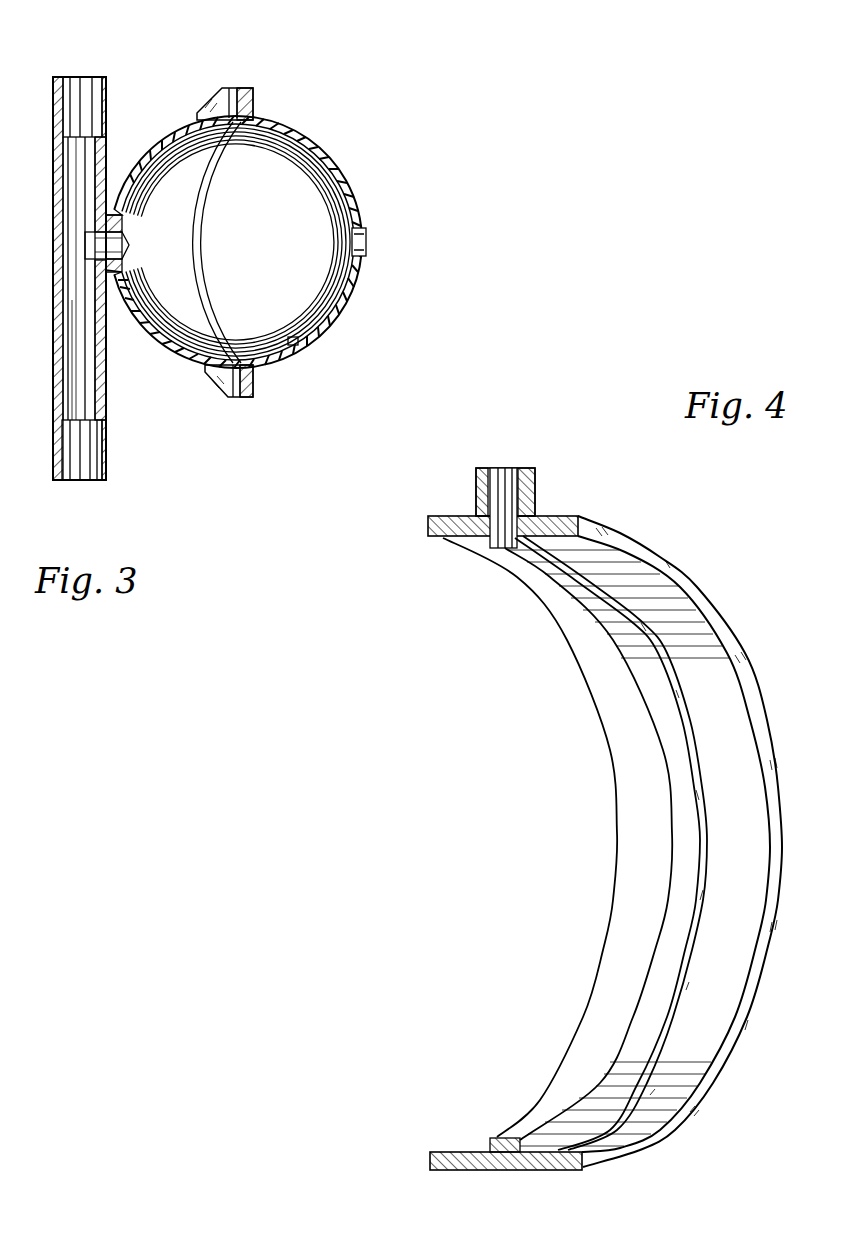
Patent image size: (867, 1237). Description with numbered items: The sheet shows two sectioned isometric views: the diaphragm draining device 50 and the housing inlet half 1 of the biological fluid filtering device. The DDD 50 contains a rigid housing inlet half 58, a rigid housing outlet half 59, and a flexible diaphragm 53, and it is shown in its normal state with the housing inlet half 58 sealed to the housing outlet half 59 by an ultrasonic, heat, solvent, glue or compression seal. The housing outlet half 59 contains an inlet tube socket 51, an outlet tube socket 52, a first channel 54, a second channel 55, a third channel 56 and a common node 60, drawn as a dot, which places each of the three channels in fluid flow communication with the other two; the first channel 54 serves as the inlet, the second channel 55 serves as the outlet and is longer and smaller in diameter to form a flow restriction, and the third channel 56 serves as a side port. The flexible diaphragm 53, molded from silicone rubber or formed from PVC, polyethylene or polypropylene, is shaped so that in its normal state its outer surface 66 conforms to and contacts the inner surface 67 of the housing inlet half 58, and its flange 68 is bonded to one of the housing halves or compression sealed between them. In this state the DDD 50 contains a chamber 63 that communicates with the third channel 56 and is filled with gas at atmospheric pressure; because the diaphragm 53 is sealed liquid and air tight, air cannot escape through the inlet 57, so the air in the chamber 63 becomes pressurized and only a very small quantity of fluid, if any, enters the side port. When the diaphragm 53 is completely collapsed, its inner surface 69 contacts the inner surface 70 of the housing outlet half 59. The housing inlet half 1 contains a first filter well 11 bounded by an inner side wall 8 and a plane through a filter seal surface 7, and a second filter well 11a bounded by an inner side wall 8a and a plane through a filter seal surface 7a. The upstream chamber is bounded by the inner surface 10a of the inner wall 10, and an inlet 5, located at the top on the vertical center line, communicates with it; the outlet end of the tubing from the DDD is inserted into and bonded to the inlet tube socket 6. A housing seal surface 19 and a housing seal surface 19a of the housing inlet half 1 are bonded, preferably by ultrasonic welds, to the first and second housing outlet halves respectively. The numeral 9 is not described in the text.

In FIG. 3, the diaphragm draining device 50 is at (398, 163).
In FIG. 3, the inlet tube socket 51 is at (86, 88).
In FIG. 3, the outlet tube socket 52 is at (84, 468).
In FIG. 3, the flexible diaphragm 53 is at (303, 140).
In FIG. 3, the first channel 54 is at (83, 157).
In FIG. 3, the second channel 55 is at (83, 388).
In FIG. 3, the third channel 56 is at (117, 303).
In FIG. 3, the inlet 57 is at (366, 243).
In FIG. 3, the housing inlet half 58 is at (350, 330).
In FIG. 3, the housing outlet half 59 is at (216, 405).
In FIG. 3, the common node 60 is at (88, 255).
In FIG. 3, the chamber 63 is at (298, 237).
In FIG. 3, the outer surface 66 is at (348, 287).
In FIG. 3, the inner surface 67 is at (300, 344).
In FIG. 3, the flange 68 is at (233, 116).
In FIG. 3, the inner surface 69 is at (313, 157).
In FIG. 3, the inner surface 70 is at (150, 167).
In FIG. 4, the housing inlet half 1 is at (400, 995).
In FIG. 4, the inlet 5 is at (496, 550).
In FIG. 4, the inlet tube socket 6 is at (500, 480).
In FIG. 4, the filter seal surface 7 is at (628, 655).
In FIG. 4, the filter seal surface 7a is at (655, 635).
In FIG. 4, the inner side wall 8 is at (630, 770).
In FIG. 4, the inner side wall 8a is at (712, 668).
In FIG. 4, the flange 9 is at (562, 520).
In FIG. 4, the inner wall 10 is at (492, 1140).
In FIG. 4, the inner surface 10a is at (635, 1030).
In FIG. 4, the first filter well 11 is at (540, 888).
In FIG. 4, the second filter well 11a is at (728, 1040).
In FIG. 4, the housing seal surface 19 is at (430, 525).
In FIG. 4, the housing seal surface 19a is at (652, 555).